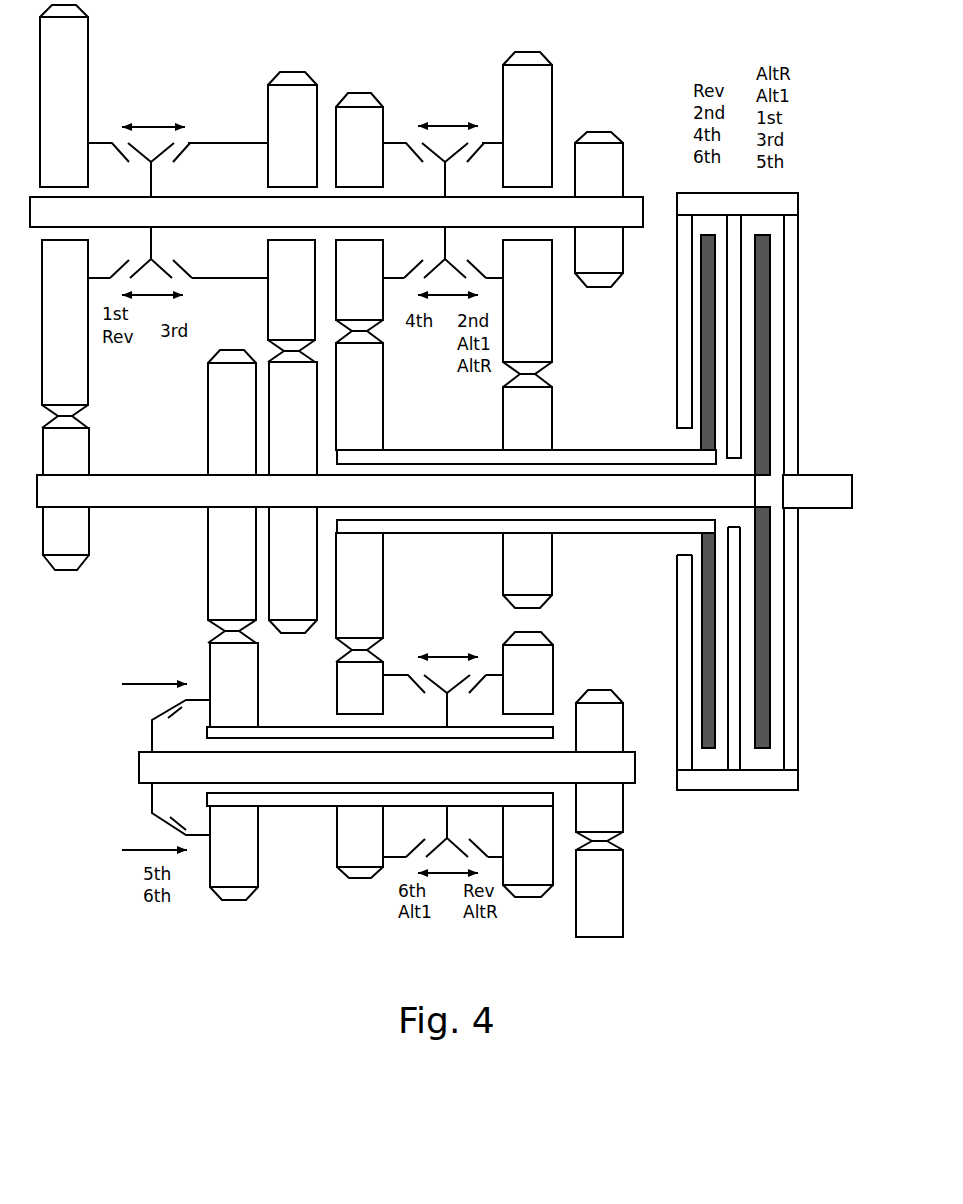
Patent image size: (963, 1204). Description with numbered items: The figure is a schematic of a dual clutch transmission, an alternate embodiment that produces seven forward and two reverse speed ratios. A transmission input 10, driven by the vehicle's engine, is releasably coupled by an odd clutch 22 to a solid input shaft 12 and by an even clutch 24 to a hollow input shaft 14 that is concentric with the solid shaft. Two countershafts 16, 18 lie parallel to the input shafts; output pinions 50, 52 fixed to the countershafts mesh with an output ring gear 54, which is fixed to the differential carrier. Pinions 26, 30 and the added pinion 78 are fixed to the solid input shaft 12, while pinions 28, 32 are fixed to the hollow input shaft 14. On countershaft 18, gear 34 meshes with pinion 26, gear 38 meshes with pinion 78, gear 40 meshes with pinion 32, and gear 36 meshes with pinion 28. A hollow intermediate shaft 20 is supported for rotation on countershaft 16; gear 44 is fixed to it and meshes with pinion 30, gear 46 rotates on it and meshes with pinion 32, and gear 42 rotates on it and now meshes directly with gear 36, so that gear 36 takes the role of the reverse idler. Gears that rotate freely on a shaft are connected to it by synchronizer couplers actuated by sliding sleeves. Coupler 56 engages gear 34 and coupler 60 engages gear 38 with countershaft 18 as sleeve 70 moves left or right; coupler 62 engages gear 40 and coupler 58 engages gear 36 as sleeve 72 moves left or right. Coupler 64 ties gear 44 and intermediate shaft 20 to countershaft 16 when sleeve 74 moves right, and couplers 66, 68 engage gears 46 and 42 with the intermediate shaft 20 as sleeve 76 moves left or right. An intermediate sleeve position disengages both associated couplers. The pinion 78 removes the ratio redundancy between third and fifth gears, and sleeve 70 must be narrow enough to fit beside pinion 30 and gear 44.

The transmission input 10 is at (817, 491).
The solid input shaft 12 is at (396, 491).
The hollow input shaft 14 is at (620, 450).
The countershaft 16 is at (387, 767).
The countershaft 18 is at (336, 212).
The hollow intermediate shaft 20 is at (293, 807).
The odd clutch 22 is at (780, 799).
The even clutch 24 is at (717, 799).
The pinion 26 is at (66, 499).
The pinion 28 is at (527, 497).
The pinion 30 is at (232, 485).
The pinion 32 is at (359, 490).
The gear 34 is at (65, 322).
The gear 36 is at (527, 301).
The gear 38 is at (291, 290).
The gear 40 is at (359, 280).
The gear 42 is at (528, 764).
The gear 44 is at (234, 771).
The gear 46 is at (360, 770).
The output pinion 50 is at (599, 761).
The output pinion 52 is at (599, 209).
The output ring gear 54 is at (599, 893).
The coupler 56 is at (122, 140).
The coupler 58 is at (472, 140).
The coupler 60 is at (180, 140).
The coupler 62 is at (420, 140).
The coupler 64 is at (170, 702).
The coupler 66 is at (420, 672).
The coupler 68 is at (475, 672).
The sleeve 70 is at (152, 113).
The sleeve 72 is at (448, 113).
The sleeve 74 is at (152, 675).
The sleeve 76 is at (450, 645).
The pinion 78 is at (293, 497).